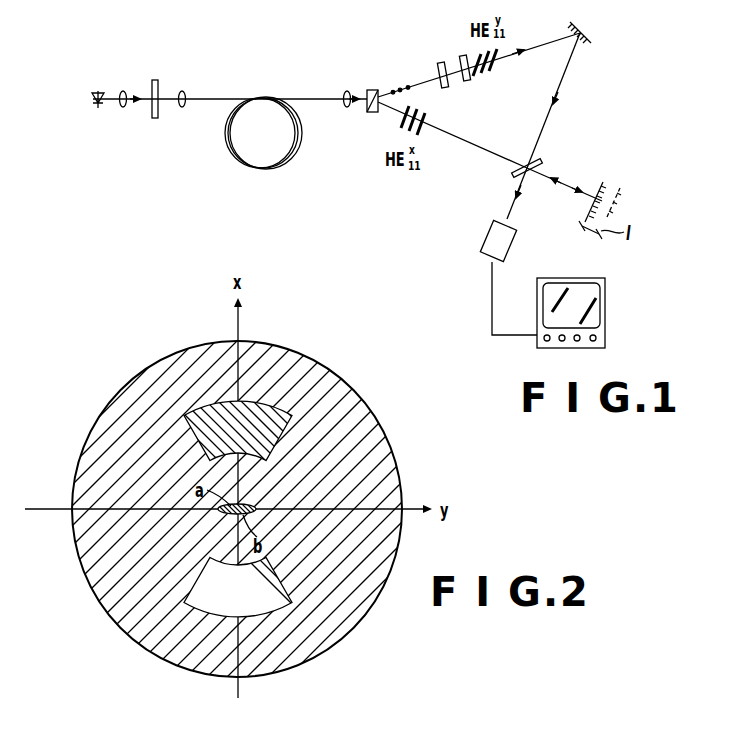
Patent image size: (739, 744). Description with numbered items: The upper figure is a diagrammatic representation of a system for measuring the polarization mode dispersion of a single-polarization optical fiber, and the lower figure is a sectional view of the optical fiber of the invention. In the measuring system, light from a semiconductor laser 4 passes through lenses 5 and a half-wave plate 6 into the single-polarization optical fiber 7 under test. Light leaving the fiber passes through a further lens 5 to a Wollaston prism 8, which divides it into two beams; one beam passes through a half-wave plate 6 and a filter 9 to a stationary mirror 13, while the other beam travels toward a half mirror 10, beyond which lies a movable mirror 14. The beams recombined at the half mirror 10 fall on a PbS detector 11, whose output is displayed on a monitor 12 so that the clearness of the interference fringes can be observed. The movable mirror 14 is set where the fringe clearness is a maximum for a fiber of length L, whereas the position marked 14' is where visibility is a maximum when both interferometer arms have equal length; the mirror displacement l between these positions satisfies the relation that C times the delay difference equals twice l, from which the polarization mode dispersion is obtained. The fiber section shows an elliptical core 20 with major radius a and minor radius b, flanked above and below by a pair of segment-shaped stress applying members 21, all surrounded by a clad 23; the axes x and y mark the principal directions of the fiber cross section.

In FIG. 1, the semiconductor laser 4 is at (99, 91).
In FIG. 1, the lenses 5 is at (125, 90).
In FIG. 1, the λ/2 plate 6 is at (157, 80).
In FIG. 1, the single-polarization optical fiber 7 is at (270, 167).
In FIG. 1, the Wollaston prism 8 is at (375, 90).
In FIG. 1, the filter 9 is at (463, 57).
In FIG. 1, the half mirror 10 is at (523, 164).
In FIG. 1, the PbS detector 11 is at (485, 238).
In FIG. 1, the monitor 12 is at (606, 316).
In FIG. 1, the stationary mirror (M1) 13 is at (586, 28).
In FIG. 1, the movable mirror (M2) 14 is at (592, 177).
In FIG. 1, the movable mirror position (M2') 14' is at (638, 188).
In FIG. 2, the elliptical core 20 is at (219, 516).
In FIG. 2, the segment shaped stress applying member 21 is at (217, 417).
In FIG. 2, the clad 23 is at (345, 398).